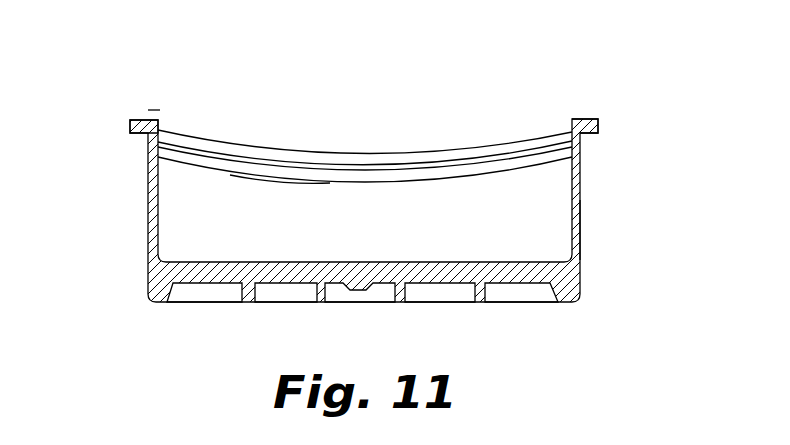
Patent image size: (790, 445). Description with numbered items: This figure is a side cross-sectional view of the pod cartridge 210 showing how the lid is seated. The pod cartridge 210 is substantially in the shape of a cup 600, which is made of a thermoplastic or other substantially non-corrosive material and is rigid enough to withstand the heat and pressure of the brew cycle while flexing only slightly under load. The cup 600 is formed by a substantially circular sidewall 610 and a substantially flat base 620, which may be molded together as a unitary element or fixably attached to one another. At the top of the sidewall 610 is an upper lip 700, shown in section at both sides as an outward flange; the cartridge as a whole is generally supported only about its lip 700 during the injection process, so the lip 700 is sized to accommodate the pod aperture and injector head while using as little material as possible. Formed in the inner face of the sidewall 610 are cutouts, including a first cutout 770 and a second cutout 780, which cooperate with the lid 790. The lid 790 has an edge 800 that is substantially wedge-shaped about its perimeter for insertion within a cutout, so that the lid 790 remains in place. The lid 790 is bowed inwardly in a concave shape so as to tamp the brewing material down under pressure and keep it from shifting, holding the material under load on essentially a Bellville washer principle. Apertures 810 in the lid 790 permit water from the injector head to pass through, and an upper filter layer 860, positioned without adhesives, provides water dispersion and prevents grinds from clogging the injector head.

The pod cartridge 210 is at (151, 95).
The cup 600 is at (583, 173).
The sidewall 610 is at (580, 230).
The base 620 is at (572, 303).
The upper lip 700 is at (600, 129).
The first cutout 770 is at (560, 133).
The second cutout 780 is at (530, 165).
The lid 790 is at (215, 142).
The edge 800 is at (157, 160).
The apertures 810 is at (292, 179).
The upper filter layer 860 is at (150, 147).